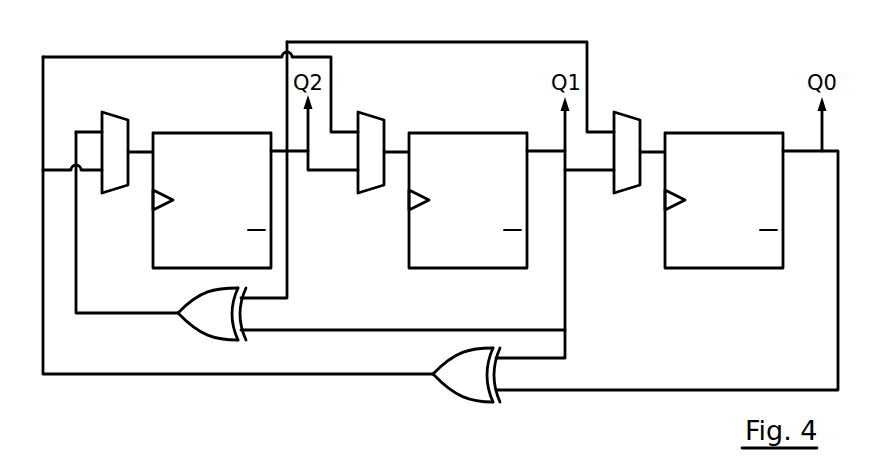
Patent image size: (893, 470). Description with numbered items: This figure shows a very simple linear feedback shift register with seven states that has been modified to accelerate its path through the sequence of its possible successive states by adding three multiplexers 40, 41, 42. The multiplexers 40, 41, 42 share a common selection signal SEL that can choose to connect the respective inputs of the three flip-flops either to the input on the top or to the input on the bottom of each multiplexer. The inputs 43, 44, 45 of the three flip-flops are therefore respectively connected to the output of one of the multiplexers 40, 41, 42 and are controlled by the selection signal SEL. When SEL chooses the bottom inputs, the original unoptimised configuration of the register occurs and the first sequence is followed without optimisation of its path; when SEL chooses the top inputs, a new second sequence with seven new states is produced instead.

The multiplexer 40 is at (628, 191).
The multiplexer 41 is at (372, 191).
The multiplexer 42 is at (117, 192).
The input 43 is at (696, 133).
The input 44 is at (448, 132).
The input 45 is at (193, 132).